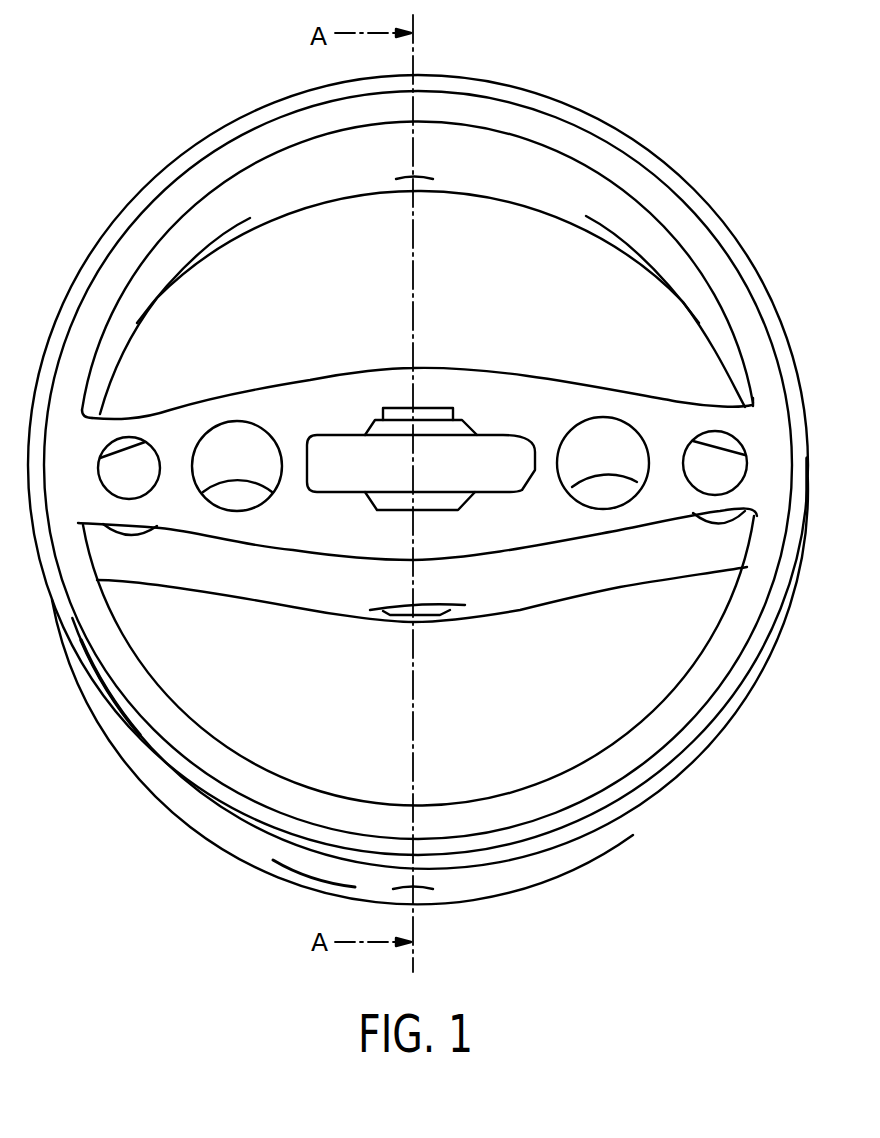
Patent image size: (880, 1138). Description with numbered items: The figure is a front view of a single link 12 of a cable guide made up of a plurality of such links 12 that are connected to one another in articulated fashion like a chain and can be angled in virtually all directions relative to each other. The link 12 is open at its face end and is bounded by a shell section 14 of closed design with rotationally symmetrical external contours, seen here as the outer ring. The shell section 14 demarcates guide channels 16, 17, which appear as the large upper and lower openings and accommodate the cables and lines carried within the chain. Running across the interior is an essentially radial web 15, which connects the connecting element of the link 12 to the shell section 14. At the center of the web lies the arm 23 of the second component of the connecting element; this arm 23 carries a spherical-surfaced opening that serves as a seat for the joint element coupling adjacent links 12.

The link 12 is at (700, 109).
The shell section 14 is at (568, 112).
The radial web 15 is at (615, 401).
The guide channel 16 is at (298, 305).
The guide channel 17 is at (298, 714).
The arm 23 is at (487, 443).